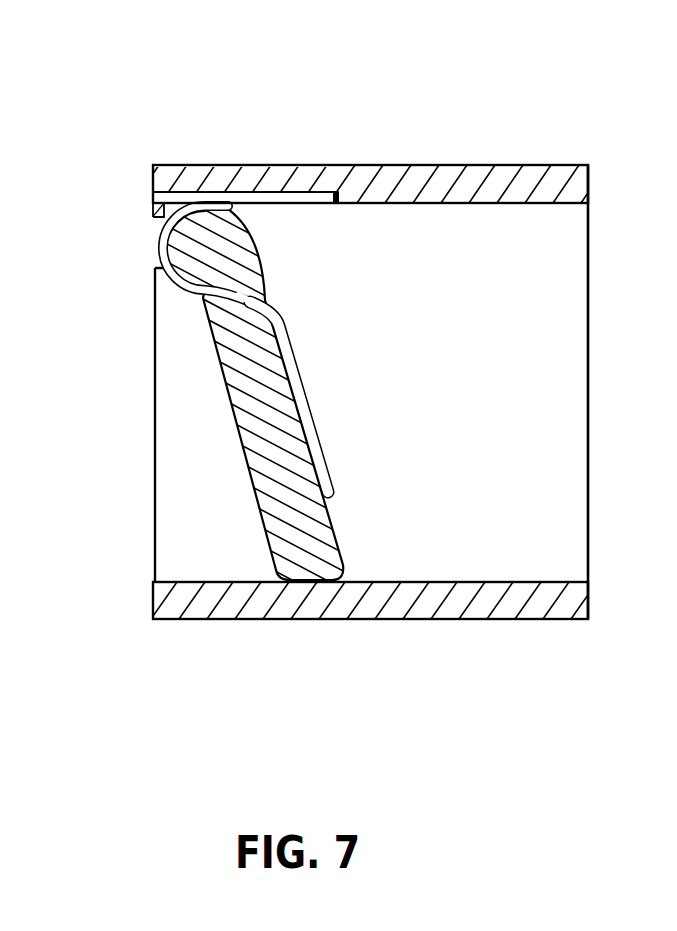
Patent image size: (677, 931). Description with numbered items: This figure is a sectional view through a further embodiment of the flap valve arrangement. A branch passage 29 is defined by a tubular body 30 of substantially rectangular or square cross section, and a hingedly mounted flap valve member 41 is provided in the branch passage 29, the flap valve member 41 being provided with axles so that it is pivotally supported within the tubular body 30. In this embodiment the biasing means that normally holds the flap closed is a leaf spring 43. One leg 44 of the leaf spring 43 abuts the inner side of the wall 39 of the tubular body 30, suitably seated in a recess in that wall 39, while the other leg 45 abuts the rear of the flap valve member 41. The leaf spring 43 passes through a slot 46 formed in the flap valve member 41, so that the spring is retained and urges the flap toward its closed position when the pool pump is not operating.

The branch passage 29 is at (582, 382).
The tubular body 30 is at (358, 355).
The wall 39 is at (510, 172).
The flap valve member 41 is at (270, 462).
The leaf spring 43 is at (133, 240).
The leg 44 is at (360, 143).
The leg 45 is at (336, 498).
The slot 46 is at (212, 301).